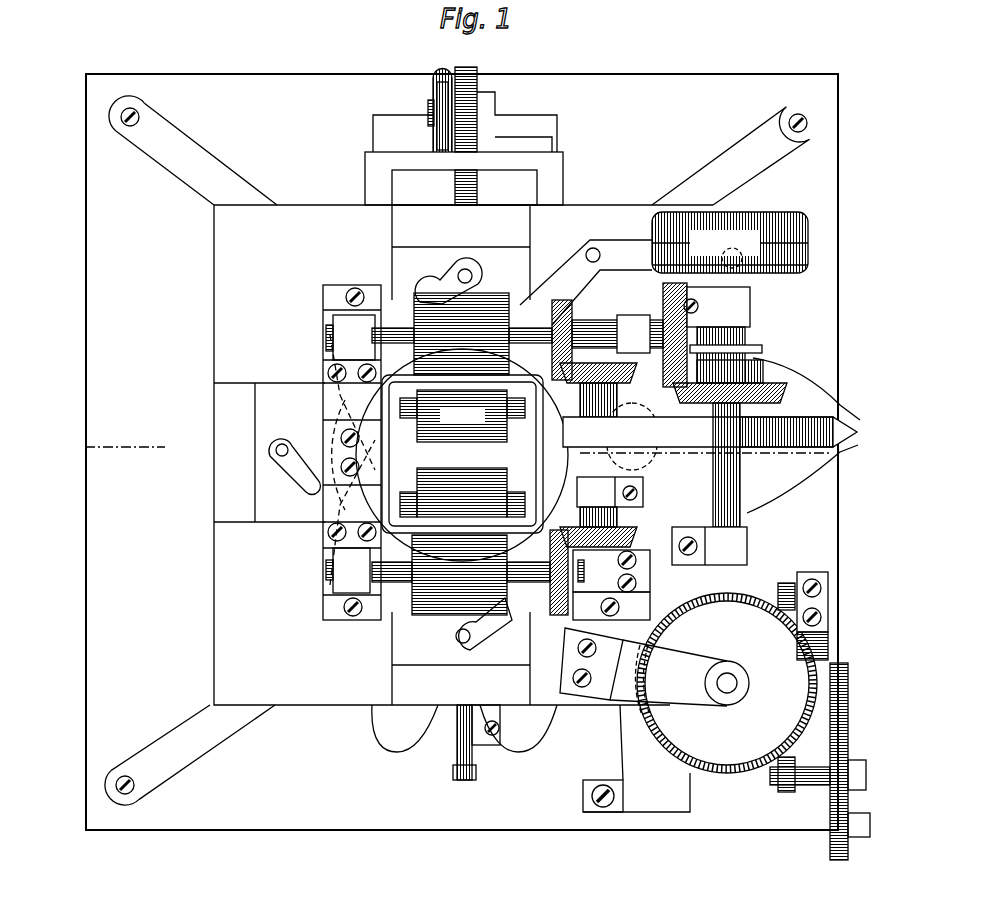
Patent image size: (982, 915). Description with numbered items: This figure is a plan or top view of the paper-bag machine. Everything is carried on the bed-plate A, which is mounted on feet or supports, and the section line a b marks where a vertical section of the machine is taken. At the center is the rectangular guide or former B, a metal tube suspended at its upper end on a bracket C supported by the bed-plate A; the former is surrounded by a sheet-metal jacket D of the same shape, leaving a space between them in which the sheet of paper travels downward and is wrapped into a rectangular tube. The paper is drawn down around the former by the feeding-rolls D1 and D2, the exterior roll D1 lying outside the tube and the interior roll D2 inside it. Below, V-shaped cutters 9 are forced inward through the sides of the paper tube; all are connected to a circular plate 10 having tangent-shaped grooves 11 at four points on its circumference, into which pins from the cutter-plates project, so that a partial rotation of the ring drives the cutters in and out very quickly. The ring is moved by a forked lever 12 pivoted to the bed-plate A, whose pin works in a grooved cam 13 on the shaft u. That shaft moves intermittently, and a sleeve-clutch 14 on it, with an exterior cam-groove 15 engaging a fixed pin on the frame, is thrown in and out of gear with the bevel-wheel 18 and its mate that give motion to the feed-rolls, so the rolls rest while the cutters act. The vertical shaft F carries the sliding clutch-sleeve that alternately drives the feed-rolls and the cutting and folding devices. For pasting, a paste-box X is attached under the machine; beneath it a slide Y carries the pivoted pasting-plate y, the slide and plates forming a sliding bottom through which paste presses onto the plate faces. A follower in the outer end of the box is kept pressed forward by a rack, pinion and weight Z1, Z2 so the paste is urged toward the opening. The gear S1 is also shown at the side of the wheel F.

The bed-plate A is at (463, 455).
The section line a b a is at (442, 447).
The paste-box X is at (464, 178).
The slide Y is at (465, 122).
The weight Z2 is at (445, 72).
The rack and pinion Z1 is at (477, 192).
The exterior feeding-roll D1 is at (460, 454).
The interior feeding-roll D2 is at (462, 453).
The jacket D is at (340, 400).
The rectangular guide or former B is at (462, 454).
The cutters 9 is at (420, 454).
The circular plate 10 is at (335, 380).
The tangent-shaped grooves 11 is at (780, 592).
The forked lever 12 is at (586, 282).
The grooved cam 13 is at (742, 242).
The sleeve-clutch 14 is at (765, 372).
The cam-groove 15 is at (770, 352).
The bevel-wheel 18 is at (765, 410).
The bracket C is at (710, 433).
The section line a b is at (815, 462).
The shaft U u is at (766, 372).
The vertical shaft F is at (688, 683).
The pasting-plate y is at (475, 760).
The rack S1 is at (797, 716).